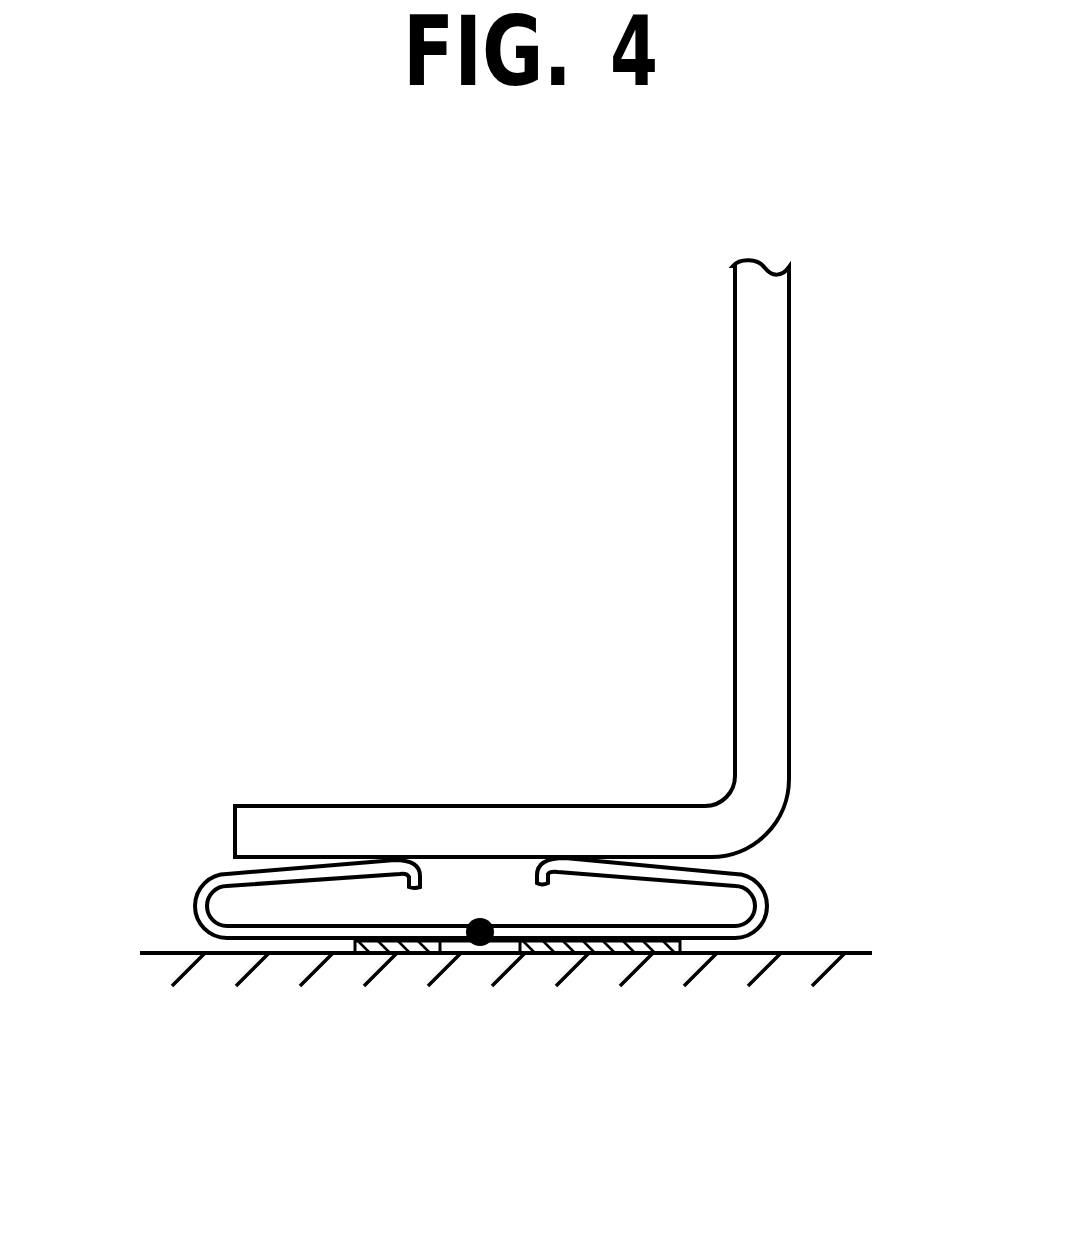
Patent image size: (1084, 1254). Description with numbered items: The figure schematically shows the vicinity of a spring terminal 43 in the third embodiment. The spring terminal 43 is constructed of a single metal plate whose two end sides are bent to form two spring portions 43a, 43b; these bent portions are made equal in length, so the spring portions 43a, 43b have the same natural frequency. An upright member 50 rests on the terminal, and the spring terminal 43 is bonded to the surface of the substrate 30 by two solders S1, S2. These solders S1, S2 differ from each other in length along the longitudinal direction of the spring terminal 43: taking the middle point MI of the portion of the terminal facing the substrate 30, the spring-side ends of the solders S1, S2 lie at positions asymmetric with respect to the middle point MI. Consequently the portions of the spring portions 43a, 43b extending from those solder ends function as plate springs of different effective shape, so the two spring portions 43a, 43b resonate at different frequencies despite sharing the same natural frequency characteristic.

The L-shaped member 50 is at (790, 503).
The spring terminal 43 is at (487, 983).
The spring portion 43a is at (717, 866).
The spring portion 43b is at (227, 873).
The substrate 30 is at (750, 967).
The solder S1 is at (632, 953).
The solder S2 is at (388, 953).
The middle point MI is at (502, 953).